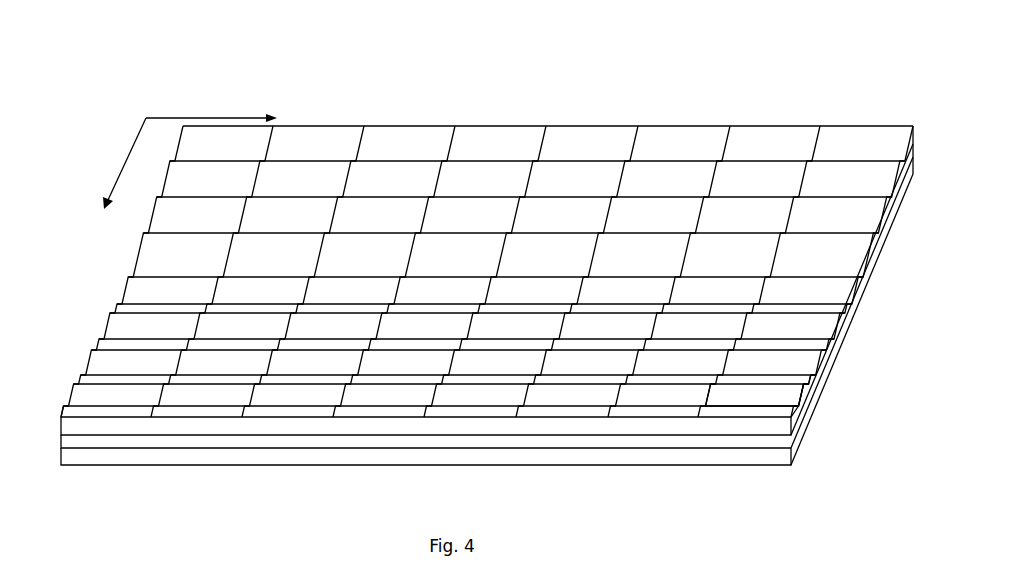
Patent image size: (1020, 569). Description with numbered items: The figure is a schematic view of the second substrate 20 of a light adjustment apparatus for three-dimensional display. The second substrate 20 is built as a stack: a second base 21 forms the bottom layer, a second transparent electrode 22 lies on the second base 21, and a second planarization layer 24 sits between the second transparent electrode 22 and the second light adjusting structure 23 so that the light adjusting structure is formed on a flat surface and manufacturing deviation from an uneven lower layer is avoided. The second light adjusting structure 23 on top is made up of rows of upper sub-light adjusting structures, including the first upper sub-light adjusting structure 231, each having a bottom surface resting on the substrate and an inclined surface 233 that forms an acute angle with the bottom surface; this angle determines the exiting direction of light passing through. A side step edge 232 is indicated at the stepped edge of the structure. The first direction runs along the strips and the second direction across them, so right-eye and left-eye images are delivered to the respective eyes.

The second substrate 20 is at (244, 70).
The second base 21 is at (373, 456).
The second transparent electrode 22 is at (432, 442).
The second light adjusting structure 23 is at (110, 275).
The second planarization layer 24 is at (483, 430).
The first upper sub-light adjusting structure 231 is at (567, 412).
The side step edge 232 is at (810, 403).
The inclined surface 233 is at (773, 400).